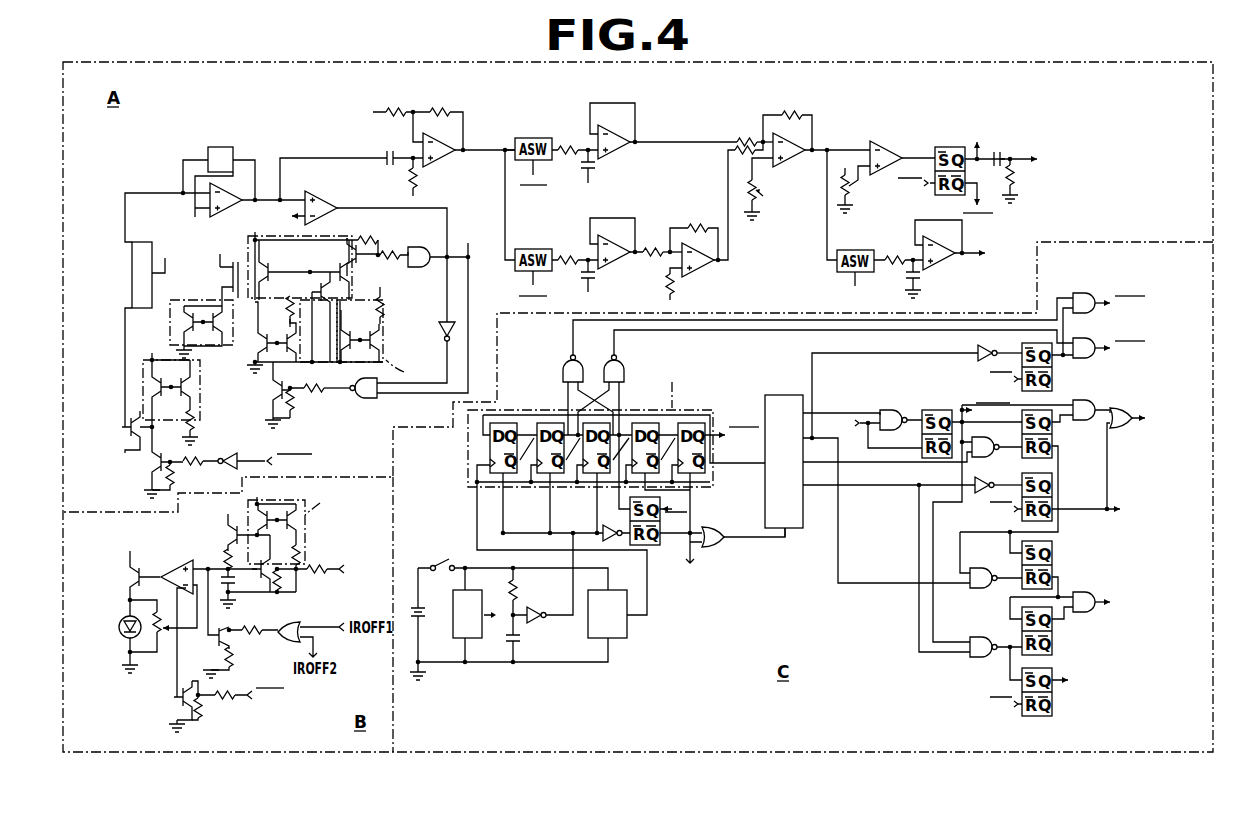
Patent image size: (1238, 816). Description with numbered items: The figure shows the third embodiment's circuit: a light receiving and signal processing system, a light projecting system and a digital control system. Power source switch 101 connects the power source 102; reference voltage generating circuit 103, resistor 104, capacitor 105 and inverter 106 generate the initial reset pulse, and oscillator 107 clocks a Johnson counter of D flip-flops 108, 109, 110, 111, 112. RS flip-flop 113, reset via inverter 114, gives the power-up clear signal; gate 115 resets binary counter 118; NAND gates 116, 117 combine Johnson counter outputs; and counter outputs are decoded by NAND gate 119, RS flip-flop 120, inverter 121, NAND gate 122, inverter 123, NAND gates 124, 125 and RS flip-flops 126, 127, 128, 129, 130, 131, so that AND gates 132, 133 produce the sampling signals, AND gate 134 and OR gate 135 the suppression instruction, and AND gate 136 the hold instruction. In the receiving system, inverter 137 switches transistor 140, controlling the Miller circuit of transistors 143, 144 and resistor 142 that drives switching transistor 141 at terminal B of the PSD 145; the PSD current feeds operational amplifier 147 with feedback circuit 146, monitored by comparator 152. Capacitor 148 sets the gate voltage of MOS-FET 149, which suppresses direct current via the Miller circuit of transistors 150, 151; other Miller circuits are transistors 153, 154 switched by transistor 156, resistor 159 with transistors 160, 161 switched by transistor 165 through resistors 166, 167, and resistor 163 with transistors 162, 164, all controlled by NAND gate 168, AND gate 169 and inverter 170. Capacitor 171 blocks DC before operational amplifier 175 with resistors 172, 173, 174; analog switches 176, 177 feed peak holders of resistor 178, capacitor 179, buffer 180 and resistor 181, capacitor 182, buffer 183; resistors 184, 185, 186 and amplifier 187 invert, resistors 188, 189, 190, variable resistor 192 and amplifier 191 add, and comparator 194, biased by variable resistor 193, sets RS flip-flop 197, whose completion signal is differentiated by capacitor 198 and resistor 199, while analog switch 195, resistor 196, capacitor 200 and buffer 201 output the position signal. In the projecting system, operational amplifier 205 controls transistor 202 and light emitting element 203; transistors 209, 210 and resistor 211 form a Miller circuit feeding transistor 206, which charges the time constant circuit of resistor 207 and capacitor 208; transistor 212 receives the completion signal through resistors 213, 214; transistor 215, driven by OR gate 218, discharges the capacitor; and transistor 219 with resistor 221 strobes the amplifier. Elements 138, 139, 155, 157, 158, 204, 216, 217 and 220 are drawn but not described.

The power source switch 101 is at (441, 559).
The power source 102 is at (411, 600).
The reference voltage generating circuit 103 is at (453, 626).
The resistor 104 is at (520, 592).
The capacitor 105 is at (519, 640).
The inverter 106 is at (545, 613).
The oscillator 107 is at (620, 590).
The D flip-flop 108 is at (504, 423).
The D flip-flop 109 is at (540, 423).
The D flip-flop 110 is at (590, 475).
The D flip-flop 111 is at (644, 423).
The D flip-flop 112 is at (688, 423).
The RS flip-flop 113 is at (655, 545).
The inverter 114 is at (607, 525).
The AND gate 115 is at (718, 526).
The NAND gate 116 is at (562, 372).
The NAND gate 117 is at (626, 372).
The binary counter 118 is at (784, 395).
The NAND gate 119 is at (890, 408).
The RS flip-flop 120 is at (935, 410).
The inverter 121 is at (975, 350).
The NAND gate 122 is at (982, 442).
The inverter 123 is at (982, 481).
The NAND gate 124 is at (978, 570).
The NAND gate 125 is at (978, 637).
The RS flip-flop 126 is at (1052, 376).
The RS flip-flop 127 is at (1053, 450).
The RS flip-flop 128 is at (1053, 488).
The RS flip-flop 129 is at (1054, 558).
The RS flip-flop 130 is at (1053, 645).
The RS flip-flop 131 is at (1053, 707).
The AND gate 132 is at (1079, 292).
The AND gate 133 is at (1082, 338).
The AND gate 134 is at (1090, 400).
The OR gate 135 is at (1128, 428).
The AND gate 136 is at (1088, 596).
The inverter 137 is at (227, 469).
The resistor 138 is at (195, 460).
The resistor 139 is at (175, 478).
The transistor 140 is at (153, 472).
The switching transistor 141 is at (122, 428).
The resistor 142 is at (196, 418).
The transistor 143 is at (150, 390).
The transistor 144 is at (192, 388).
The PSD 145 is at (132, 270).
The feedback circuit 146 is at (222, 147).
The operational amplifier 147 is at (235, 197).
The capacitor 148 is at (232, 262).
The P-channel MOS-FET 149 is at (222, 276).
The transistor 150 is at (182, 317).
The transistor 151 is at (228, 345).
The comparator 152 is at (322, 196).
The transistor 153 is at (270, 267).
The transistor 154 is at (328, 267).
The transistor 155 is at (310, 304).
The transistor 156 is at (348, 240).
The resistor 157 is at (370, 240).
The resistor 158 is at (394, 250).
The resistor 159 is at (288, 308).
The transistor 160 is at (257, 360).
The transistor 161 is at (312, 366).
The transistor 162 is at (340, 366).
The resistor 163 is at (385, 310).
The transistor 164 is at (382, 342).
The transistor 165 is at (272, 393).
The resistor 166 is at (299, 408).
The resistor 167 is at (322, 391).
The NAND gate 168 is at (368, 401).
The AND gate 169 is at (420, 268).
The inverter 170 is at (448, 318).
The capacitor 171 is at (388, 148).
The resistor 172 is at (407, 178).
The resistor 173 is at (396, 104).
The resistor 174 is at (440, 104).
The operational amplifier 175 is at (451, 167).
The analog switch 176 is at (533, 138).
The analog switch 177 is at (533, 249).
The resistor 178 is at (568, 140).
The capacitor 179 is at (583, 172).
The buffer amplifier 180 is at (622, 160).
The resistor 181 is at (568, 250).
The capacitor 182 is at (583, 286).
The buffer amplifier 183 is at (622, 270).
The resistor 184 is at (653, 244).
The resistor 185 is at (698, 220).
The resistor 186 is at (678, 290).
The operational amplifier 187 is at (710, 268).
The resistor 188 is at (747, 134).
The resistor 189 is at (735, 152).
The resistor 190 is at (792, 107).
The operational amplifier 191 is at (792, 169).
The variable resistor 192 is at (758, 203).
The variable resistor 193 is at (850, 200).
The comparator 194 is at (888, 140).
The analog switch 195 is at (837, 268).
The resistor 196 is at (895, 252).
The RS flip-flop 197 is at (935, 147).
The capacitor 198 is at (998, 150).
The resistor 199 is at (1018, 180).
The capacitor 200 is at (908, 282).
The buffer 201 is at (949, 268).
The transistor 202 is at (130, 581).
The light emitting element iRED 203 is at (118, 630).
The variable resistor 204 is at (154, 654).
The operational amplifier 205 is at (172, 563).
The transistor 206 is at (222, 526).
The resistor 207 is at (224, 558).
The capacitor 208 is at (232, 591).
The transistor 209 is at (270, 513).
The transistor 210 is at (296, 519).
The resistor 211 is at (296, 552).
The transistor 212 is at (259, 568).
The resistor 213 is at (298, 589).
The resistor 214 is at (323, 574).
The transistor 215 is at (208, 644).
The resistor 216 is at (230, 660).
The resistor 217 is at (255, 636).
The OR gate 218 is at (276, 595).
The transistor 219 is at (173, 697).
The resistor 220 is at (204, 715).
The resistor 221 is at (230, 700).